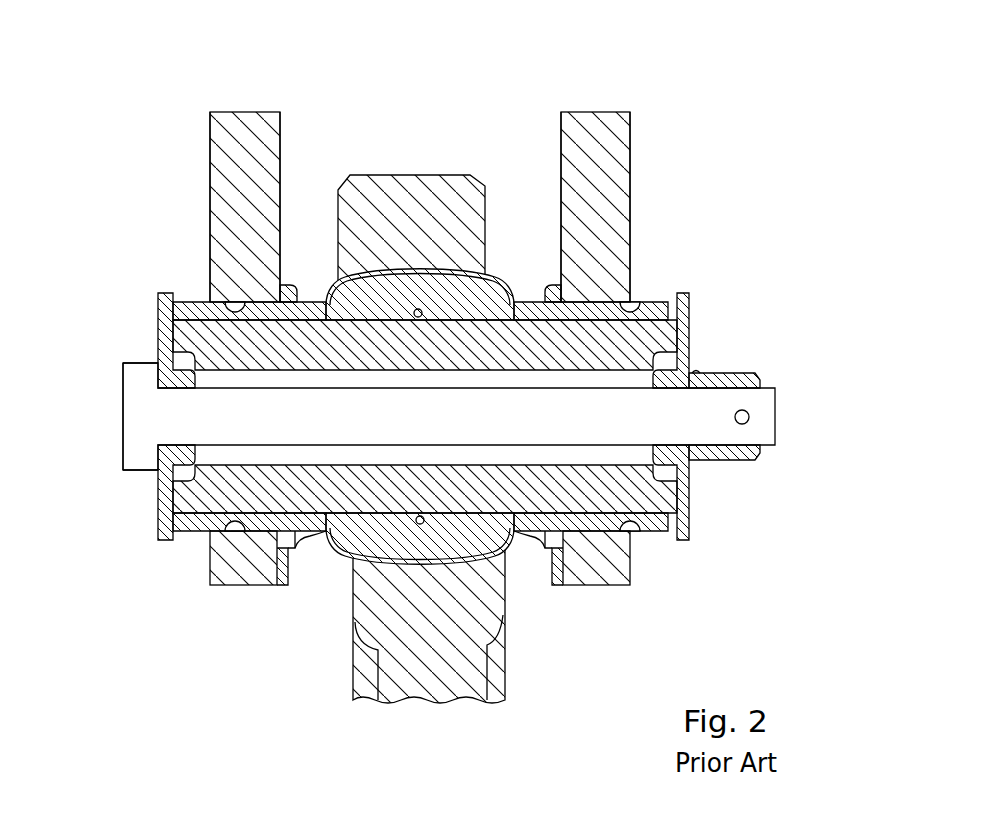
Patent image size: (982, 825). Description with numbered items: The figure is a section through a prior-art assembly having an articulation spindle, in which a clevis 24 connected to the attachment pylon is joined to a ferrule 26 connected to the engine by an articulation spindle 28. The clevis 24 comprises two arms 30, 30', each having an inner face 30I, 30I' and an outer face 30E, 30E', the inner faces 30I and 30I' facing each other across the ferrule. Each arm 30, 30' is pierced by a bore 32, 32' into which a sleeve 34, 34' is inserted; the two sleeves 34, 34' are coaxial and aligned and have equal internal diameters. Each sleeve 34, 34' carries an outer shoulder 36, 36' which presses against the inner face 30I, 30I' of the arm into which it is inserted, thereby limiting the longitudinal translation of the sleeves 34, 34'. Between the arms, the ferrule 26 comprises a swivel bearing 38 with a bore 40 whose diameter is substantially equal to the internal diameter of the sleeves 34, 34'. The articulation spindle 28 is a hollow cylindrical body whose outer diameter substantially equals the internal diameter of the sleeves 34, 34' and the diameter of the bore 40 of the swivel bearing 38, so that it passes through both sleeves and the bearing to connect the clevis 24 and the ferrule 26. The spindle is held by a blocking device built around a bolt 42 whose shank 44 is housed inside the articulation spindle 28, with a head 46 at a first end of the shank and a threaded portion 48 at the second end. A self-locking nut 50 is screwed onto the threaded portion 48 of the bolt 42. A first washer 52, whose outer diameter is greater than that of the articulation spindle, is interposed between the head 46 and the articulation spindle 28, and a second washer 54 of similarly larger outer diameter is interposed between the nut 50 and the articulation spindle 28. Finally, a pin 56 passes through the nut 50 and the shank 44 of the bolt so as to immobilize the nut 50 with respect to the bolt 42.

The clevis 24 is at (649, 178).
The ferrule 26 is at (510, 671).
The articulation spindle 28 is at (303, 339).
The arm 30 is at (237, 168).
The outer face 30E is at (158, 197).
The inner face 30I is at (303, 170).
The arm 30' is at (595, 166).
The inner face 30I' is at (527, 189).
The outer face 30E' is at (676, 182).
The bore 32 is at (218, 269).
The bore 32' is at (629, 273).
The sleeve 34 is at (239, 584).
The sleeve 34' is at (629, 557).
The outer shoulder 36 is at (268, 608).
The outer shoulder 36' is at (572, 596).
The swivel bearing 38 is at (411, 263).
The bore 40 is at (438, 330).
The bolt 42 is at (119, 421).
The shank 44 is at (337, 422).
The head 46 is at (147, 452).
The threaded portion 48 is at (728, 445).
The self-locking nut 50 is at (718, 378).
The first washer 52 is at (160, 308).
The second washer 54 is at (688, 515).
The pin 56 is at (748, 412).